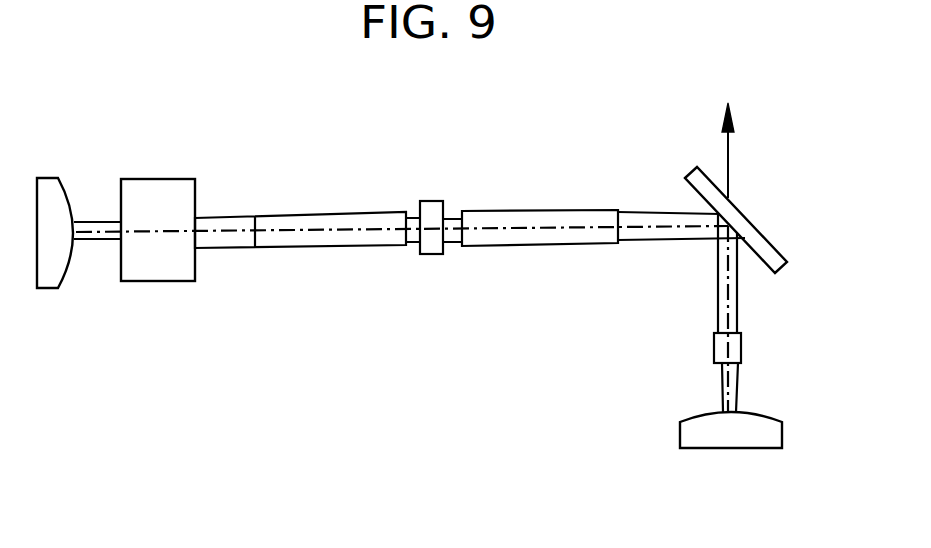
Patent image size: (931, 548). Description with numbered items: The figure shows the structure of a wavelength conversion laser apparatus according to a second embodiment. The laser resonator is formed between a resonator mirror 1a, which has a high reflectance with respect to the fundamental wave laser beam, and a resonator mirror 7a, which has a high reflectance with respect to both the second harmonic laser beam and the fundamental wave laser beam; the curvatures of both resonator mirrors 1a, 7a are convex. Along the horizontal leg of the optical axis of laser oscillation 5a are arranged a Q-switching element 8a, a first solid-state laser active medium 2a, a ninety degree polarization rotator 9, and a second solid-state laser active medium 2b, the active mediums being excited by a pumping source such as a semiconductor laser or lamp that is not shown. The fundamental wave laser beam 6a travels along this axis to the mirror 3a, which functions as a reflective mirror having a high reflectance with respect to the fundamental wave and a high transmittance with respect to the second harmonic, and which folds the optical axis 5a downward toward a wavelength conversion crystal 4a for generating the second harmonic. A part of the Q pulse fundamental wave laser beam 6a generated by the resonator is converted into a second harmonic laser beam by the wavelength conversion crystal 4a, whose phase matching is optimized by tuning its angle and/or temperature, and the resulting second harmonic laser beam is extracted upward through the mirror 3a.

The resonator mirror 1a is at (48, 288).
The Q-switching element 8a is at (157, 282).
The fundamental wave laser beam 6a is at (233, 215).
The solid-state laser active medium 2a is at (312, 248).
The 90 degree polarization rotator 9 is at (430, 255).
The solid-state laser active medium 2b is at (518, 247).
The optical axis of laser oscillation 5a is at (679, 216).
The second harmonic laser beam extracting mirror 3a is at (740, 212).
The wavelength conversion crystal 4a is at (741, 348).
The resonator mirror 7a is at (770, 414).